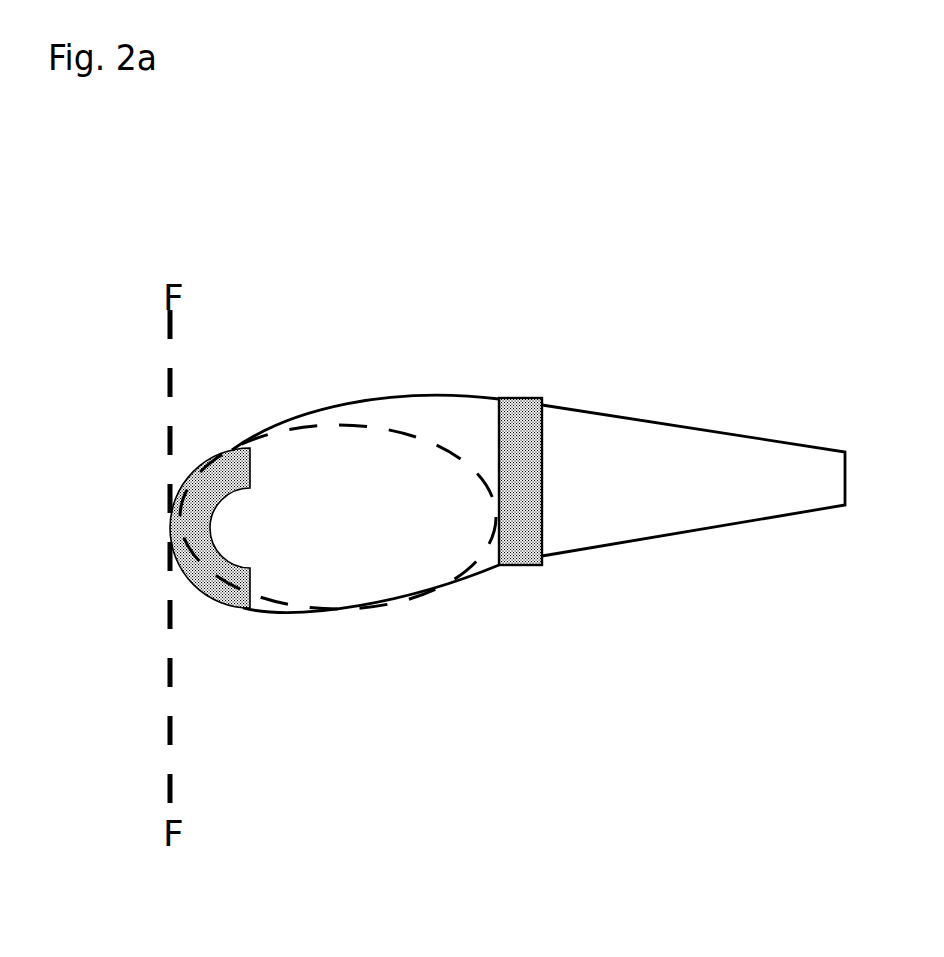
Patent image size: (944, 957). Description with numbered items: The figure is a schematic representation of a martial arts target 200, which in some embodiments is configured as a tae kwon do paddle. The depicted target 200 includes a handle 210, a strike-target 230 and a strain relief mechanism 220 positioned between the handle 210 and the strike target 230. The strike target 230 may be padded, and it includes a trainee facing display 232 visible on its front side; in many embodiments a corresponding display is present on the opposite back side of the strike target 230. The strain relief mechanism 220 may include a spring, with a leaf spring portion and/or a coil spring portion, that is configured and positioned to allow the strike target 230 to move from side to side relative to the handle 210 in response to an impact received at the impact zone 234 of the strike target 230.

The martial arts target 200 is at (777, 58).
The handle 210 is at (687, 517).
The strain relief mechanism 220 is at (518, 415).
The strike-target 230 is at (473, 583).
The trainee facing display 232 is at (210, 572).
The impact zone 234 is at (357, 422).